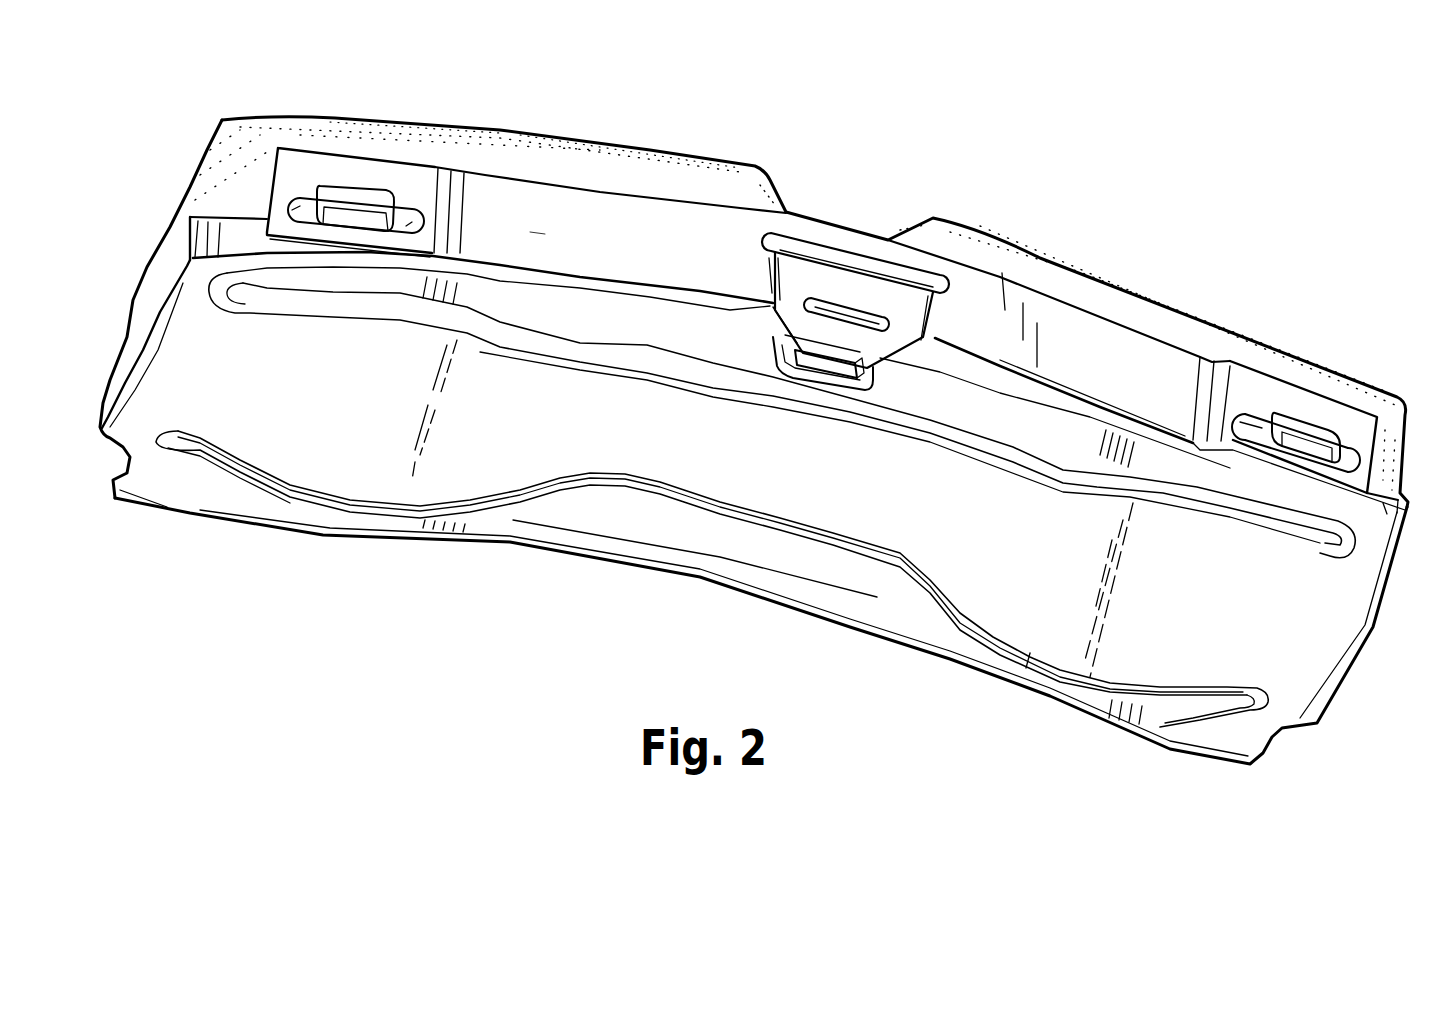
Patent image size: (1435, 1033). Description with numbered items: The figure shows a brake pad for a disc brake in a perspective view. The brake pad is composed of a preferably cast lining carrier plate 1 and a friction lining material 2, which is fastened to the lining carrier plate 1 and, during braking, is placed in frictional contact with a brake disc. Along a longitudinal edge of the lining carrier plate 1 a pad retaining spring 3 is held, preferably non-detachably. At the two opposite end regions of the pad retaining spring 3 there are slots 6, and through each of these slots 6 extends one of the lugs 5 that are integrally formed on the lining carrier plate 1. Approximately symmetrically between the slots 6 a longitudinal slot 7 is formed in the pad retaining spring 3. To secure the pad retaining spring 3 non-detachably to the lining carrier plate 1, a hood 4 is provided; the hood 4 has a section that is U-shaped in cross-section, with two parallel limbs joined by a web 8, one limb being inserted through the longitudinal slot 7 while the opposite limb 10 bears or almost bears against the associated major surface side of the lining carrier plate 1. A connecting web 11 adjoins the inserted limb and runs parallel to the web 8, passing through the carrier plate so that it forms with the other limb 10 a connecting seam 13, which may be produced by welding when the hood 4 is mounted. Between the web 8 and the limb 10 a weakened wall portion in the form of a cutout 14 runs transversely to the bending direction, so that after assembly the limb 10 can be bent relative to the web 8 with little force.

The lining carrier plate 1 is at (323, 472).
The friction lining material 2 is at (463, 155).
The pad retaining spring 3 is at (700, 233).
The hood 4 is at (906, 345).
The lugs 5 is at (335, 188).
The slots 6 is at (298, 198).
The longitudinal slot 7 is at (940, 280).
The web 8 is at (850, 280).
The limb 10 is at (777, 322).
The connecting web 11 is at (820, 370).
The connecting seam 13 is at (843, 357).
The cutout 14 is at (817, 303).